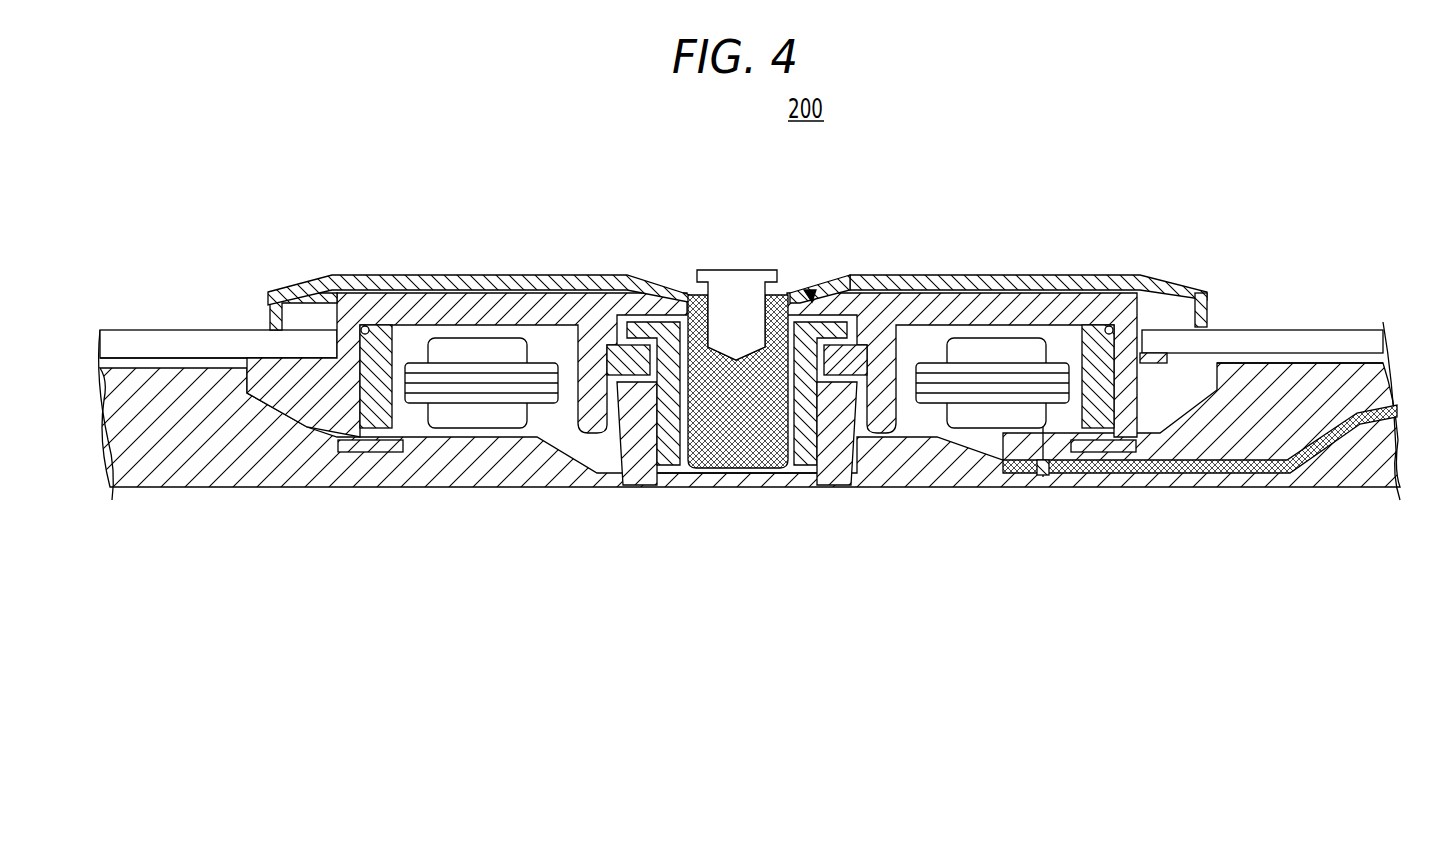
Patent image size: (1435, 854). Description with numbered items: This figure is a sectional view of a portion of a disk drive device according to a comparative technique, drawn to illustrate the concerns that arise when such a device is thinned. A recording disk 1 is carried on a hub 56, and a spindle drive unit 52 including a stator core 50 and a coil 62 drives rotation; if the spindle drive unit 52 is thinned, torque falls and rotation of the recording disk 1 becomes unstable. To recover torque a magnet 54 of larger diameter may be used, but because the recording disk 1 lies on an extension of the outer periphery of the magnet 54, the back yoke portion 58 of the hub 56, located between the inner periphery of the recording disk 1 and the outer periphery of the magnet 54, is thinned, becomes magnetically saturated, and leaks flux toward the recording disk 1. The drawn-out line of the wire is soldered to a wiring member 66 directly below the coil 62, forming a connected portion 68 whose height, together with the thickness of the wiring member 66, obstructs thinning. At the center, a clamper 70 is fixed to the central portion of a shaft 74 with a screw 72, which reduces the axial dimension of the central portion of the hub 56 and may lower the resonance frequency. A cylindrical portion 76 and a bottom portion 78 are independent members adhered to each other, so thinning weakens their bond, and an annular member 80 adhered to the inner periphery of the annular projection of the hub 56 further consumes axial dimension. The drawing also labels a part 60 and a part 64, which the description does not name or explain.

The recording disk 1 is at (172, 347).
The stator core 50 is at (420, 392).
The spindle drive unit 52 is at (420, 323).
The magnet 54 is at (1078, 290).
The hub 56 is at (588, 295).
The back yoke portion 58 is at (1130, 288).
The base block 60 is at (918, 477).
The coil 62 is at (985, 343).
The seal 64 is at (808, 290).
The wiring member 66 is at (1148, 477).
The connected portion 68 is at (1038, 480).
The clamper 70 is at (318, 278).
The screw 72 is at (735, 300).
The shaft 74 is at (713, 470).
The cylindrical portion 76 is at (633, 467).
The bottom portion 78 is at (783, 488).
The annular member 80 is at (838, 295).